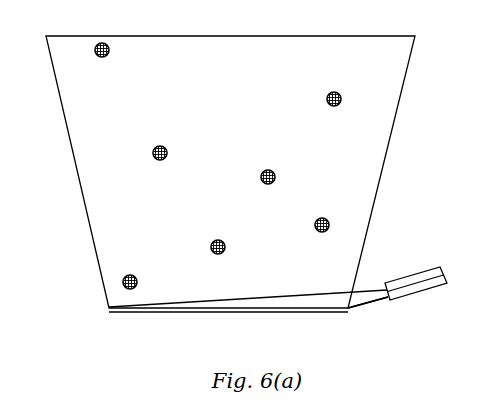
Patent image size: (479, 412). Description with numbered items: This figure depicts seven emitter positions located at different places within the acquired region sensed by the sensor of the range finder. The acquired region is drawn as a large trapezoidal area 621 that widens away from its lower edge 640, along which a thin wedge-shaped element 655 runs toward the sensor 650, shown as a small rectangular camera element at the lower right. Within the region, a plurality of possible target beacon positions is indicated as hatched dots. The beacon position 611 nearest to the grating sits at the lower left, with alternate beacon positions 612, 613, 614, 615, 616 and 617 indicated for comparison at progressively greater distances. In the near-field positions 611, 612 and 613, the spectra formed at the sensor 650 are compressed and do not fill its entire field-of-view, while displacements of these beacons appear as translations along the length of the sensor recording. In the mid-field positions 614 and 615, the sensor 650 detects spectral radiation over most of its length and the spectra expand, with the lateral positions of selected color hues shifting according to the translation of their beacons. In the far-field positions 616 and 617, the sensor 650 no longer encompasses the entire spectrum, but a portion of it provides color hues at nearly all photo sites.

The display panel 621 is at (84, 200).
The light guide / bottom edge 640 is at (110, 313).
The sensor 650 is at (405, 280).
The light coupling wedge 655 is at (355, 305).
The beacon position 611 is at (127, 275).
The beacon position 612 is at (223, 240).
The beacon position 613 is at (320, 214).
The beacon position 614 is at (275, 175).
The beacon position 615 is at (168, 152).
The beacon position 616 is at (328, 97).
The beacon position 617 is at (108, 56).